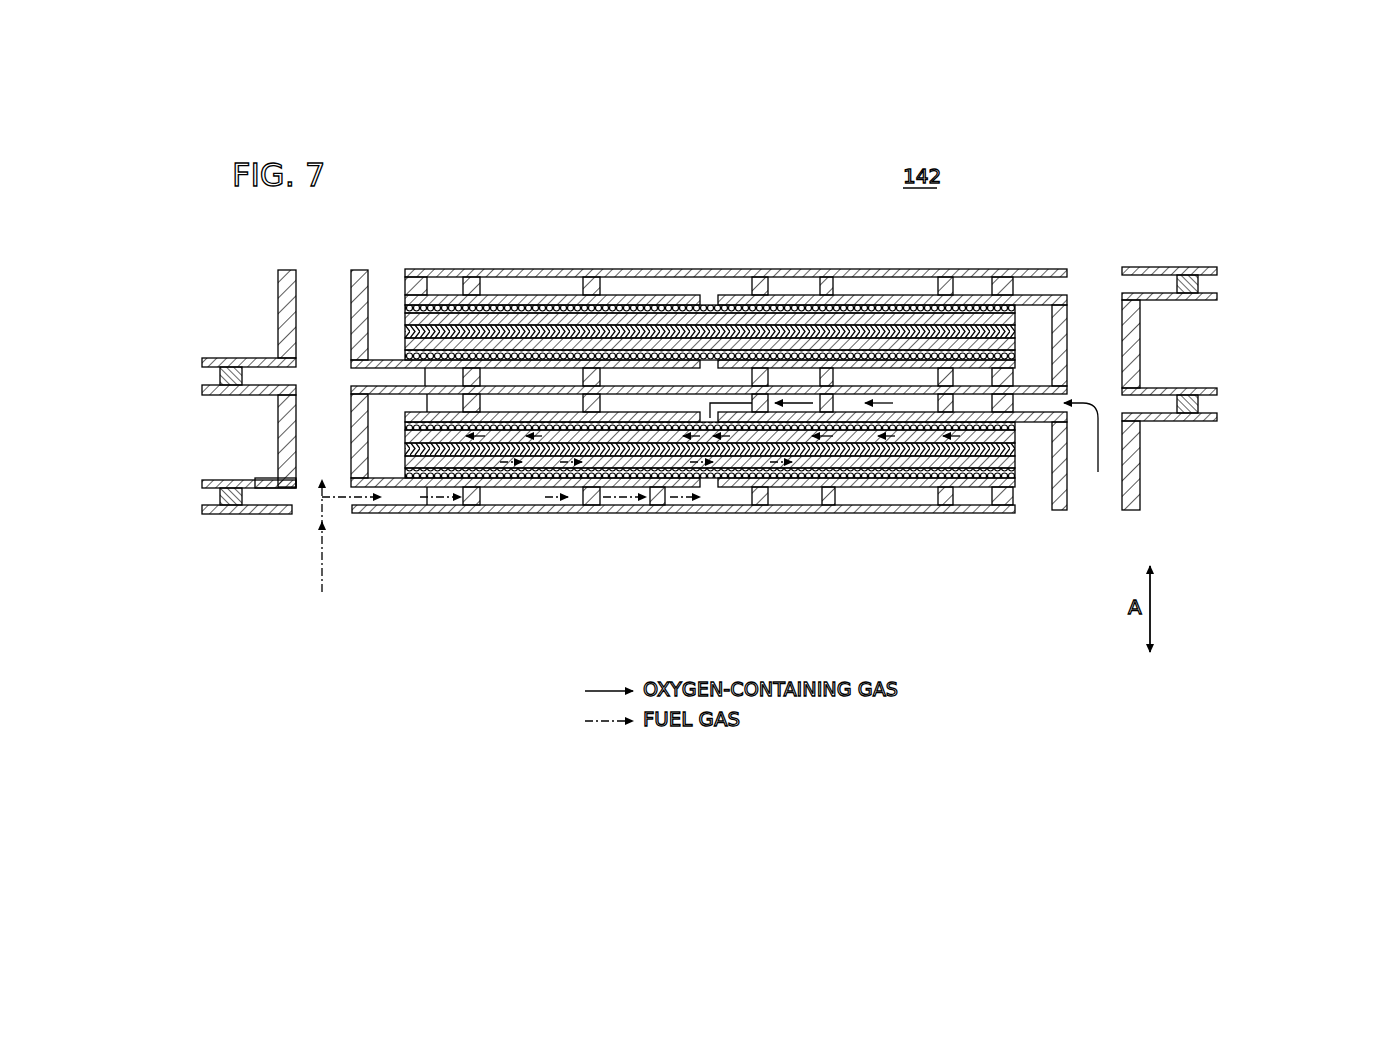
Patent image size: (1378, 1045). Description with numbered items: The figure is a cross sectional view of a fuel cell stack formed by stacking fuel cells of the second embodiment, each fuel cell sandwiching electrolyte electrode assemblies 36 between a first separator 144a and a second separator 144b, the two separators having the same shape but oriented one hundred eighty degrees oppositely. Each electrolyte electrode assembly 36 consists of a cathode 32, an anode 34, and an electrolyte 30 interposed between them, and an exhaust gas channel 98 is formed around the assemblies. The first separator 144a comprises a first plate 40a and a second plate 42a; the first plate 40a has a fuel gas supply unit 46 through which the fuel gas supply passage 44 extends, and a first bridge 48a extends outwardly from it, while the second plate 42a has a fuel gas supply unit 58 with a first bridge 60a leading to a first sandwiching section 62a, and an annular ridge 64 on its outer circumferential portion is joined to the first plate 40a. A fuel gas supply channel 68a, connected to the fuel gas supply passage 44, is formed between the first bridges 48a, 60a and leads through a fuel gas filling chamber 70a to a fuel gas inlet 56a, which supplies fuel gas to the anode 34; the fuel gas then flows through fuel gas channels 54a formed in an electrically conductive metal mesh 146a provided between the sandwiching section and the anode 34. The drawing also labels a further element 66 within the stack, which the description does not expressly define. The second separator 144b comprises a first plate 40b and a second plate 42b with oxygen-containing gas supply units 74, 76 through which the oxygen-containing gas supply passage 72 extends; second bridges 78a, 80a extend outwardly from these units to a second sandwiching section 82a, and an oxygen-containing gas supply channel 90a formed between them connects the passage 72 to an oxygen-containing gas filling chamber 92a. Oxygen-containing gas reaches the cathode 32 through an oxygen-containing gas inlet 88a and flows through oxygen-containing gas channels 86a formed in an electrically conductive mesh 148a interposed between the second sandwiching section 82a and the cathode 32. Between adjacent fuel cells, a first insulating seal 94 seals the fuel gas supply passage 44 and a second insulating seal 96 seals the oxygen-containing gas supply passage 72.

The first separator 144a is at (136, 340).
The first plate 40a is at (202, 361).
The second plate 42a is at (202, 387).
The fuel gas supply unit 46 is at (268, 480).
The second separator 144b is at (1290, 378).
The first plate 40b is at (1220, 418).
The second plate 42b is at (1220, 392).
The oxygen-containing gas supply unit 74 is at (1160, 422).
The oxygen-containing gas supply unit 76 is at (1160, 389).
The second insulating seal 96 is at (1135, 498).
The second bridge 80a is at (1070, 386).
The second bridge 78a is at (1040, 428).
The first bridge 48a is at (383, 358).
The electrode layer 66 is at (520, 350).
The oxygen-containing gas filling chamber 92a is at (545, 380).
The oxygen-containing gas inlet 88a is at (706, 386).
The electrically conductive mesh 148a is at (633, 398).
The oxygen-containing gas channel 86a is at (880, 293).
The first insulating seal 94 is at (356, 428).
The exhaust gas channel 98 is at (389, 435).
The annular ridge 64 is at (406, 411).
The electrolyte electrode assembly 36 is at (580, 556).
The cathode 32 is at (505, 442).
The electrolyte 30 is at (530, 452).
The anode 34 is at (557, 464).
The first bridge 60a is at (377, 514).
The first sandwiching section 62a is at (982, 514).
The oxygen-containing gas supply passage 72 is at (1085, 475).
The second sandwiching section 82a is at (923, 408).
The oxygen-containing gas supply channel 90a is at (1028, 400).
The electrically conductive metal mesh 146a is at (915, 489).
The fuel gas filling chamber 70a is at (788, 498).
The fuel gas inlet 56a is at (697, 498).
The fuel gas channel 54a is at (610, 498).
The fuel gas supply channel 68a is at (352, 520).
The fuel gas supply unit 58 is at (270, 515).
The fuel gas supply passage 44 is at (311, 520).